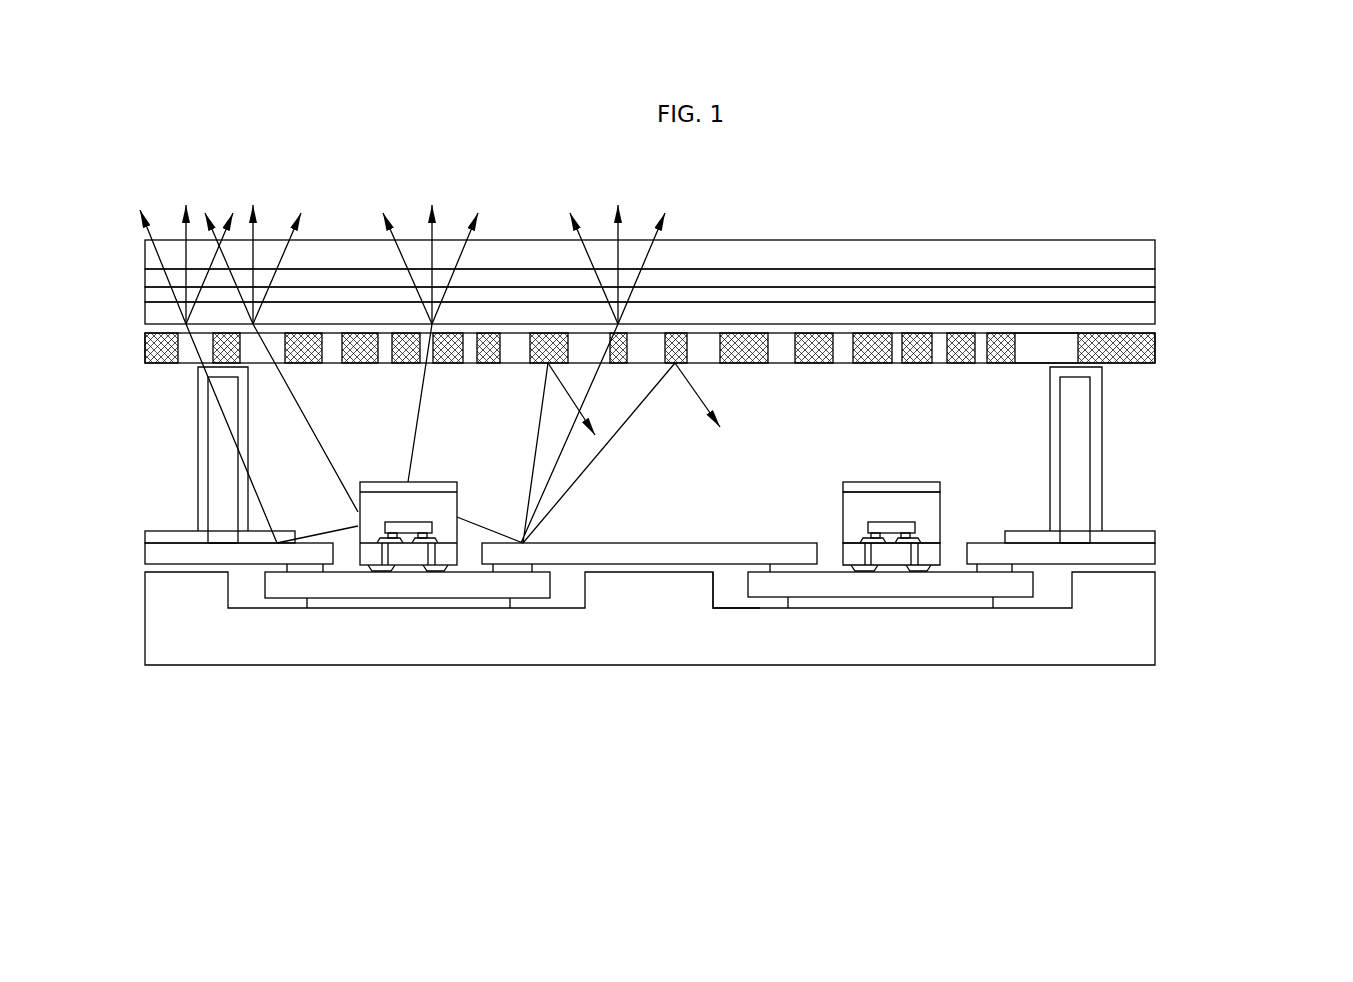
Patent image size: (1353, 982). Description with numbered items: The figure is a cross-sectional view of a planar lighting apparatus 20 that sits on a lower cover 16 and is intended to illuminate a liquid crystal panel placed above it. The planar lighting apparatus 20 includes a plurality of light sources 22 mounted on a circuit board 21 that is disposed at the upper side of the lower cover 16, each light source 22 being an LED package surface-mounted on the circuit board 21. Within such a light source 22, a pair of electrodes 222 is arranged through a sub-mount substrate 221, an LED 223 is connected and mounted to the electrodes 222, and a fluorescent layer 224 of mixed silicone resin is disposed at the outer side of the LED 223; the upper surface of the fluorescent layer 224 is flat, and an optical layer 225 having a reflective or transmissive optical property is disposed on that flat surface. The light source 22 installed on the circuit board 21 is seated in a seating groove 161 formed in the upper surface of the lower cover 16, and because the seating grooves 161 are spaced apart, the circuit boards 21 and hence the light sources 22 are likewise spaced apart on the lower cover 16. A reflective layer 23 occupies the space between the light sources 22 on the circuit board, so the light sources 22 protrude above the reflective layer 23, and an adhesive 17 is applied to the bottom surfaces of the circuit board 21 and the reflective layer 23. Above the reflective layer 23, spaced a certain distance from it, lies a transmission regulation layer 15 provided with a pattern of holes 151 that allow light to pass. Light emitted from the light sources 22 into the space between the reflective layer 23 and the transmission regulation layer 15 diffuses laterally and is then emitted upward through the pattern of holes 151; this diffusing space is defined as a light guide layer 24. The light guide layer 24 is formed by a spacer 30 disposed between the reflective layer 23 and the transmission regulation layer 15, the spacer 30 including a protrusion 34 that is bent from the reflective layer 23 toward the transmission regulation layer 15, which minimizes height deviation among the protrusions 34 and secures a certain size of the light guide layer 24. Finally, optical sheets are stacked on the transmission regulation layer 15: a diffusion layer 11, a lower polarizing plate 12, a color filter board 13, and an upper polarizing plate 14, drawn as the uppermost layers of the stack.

The diffusion layer 11 is at (145, 313).
The lower polarizing plate 12 is at (145, 293).
The upper substrate 13 is at (145, 277).
The polarizing plate 14 is at (145, 252).
The transmission regulation layer 15 is at (145, 352).
The pattern of holes 151 is at (1062, 347).
The lower cover 16 is at (868, 657).
The seating groove 161 is at (728, 605).
The adhesive 17 is at (937, 603).
The planar lighting apparatus 20 is at (1300, 622).
The circuit board 21 is at (688, 666).
The light source 22 is at (1071, 481).
The sub-mount substrate 221 is at (935, 553).
The electrode 222 is at (935, 543).
The LED 223 is at (912, 530).
The fluorescent layer 224 is at (935, 507).
The optical layer 225 is at (935, 487).
The reflective layer 23 is at (1148, 552).
The light guide layer 24 is at (1125, 400).
The spacer 30 is at (103, 367).
The protrusion 34 is at (190, 462).